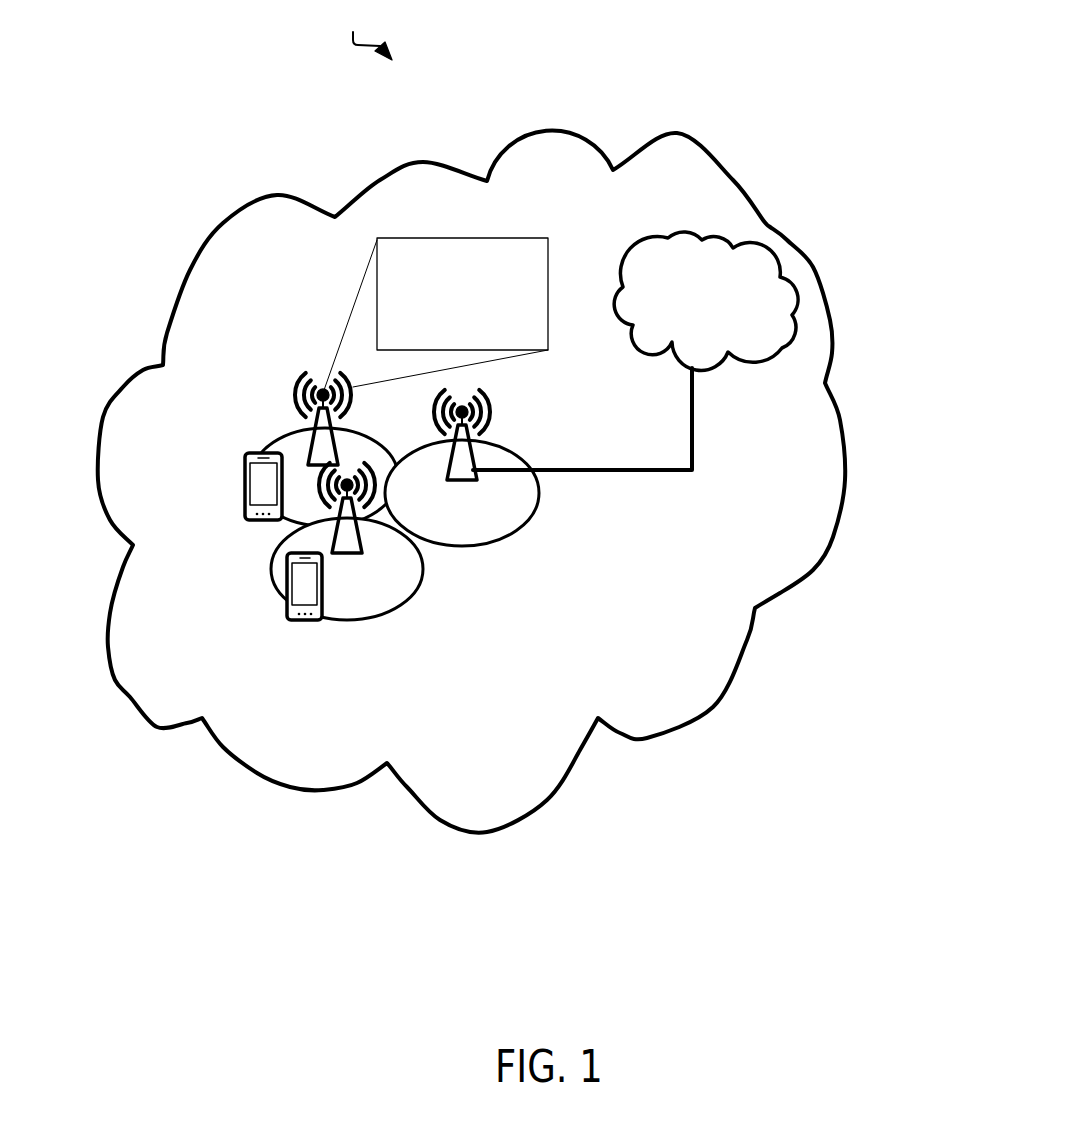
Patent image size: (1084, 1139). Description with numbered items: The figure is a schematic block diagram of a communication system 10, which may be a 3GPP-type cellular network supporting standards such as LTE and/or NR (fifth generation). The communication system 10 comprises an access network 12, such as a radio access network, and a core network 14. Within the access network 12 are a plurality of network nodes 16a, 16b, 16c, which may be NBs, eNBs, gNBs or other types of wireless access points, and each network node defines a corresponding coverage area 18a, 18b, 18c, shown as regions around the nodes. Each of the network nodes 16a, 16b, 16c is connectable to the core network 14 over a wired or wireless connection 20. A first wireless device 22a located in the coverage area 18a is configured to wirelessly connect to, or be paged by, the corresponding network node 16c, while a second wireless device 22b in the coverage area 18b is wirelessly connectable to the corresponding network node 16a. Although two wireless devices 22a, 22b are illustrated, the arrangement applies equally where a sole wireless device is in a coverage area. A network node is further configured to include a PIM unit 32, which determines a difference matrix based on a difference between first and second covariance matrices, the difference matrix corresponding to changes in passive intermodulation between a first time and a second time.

The communication system 10 is at (364, 34).
The access network 12 is at (553, 171).
The core network 14 is at (761, 308).
The network node 16a is at (360, 552).
The network node 16b is at (483, 413).
The network node 16c is at (293, 402).
The coverage area 18a is at (270, 447).
The coverage area 18b is at (425, 570).
The coverage area 18c is at (540, 495).
The connection 20 is at (693, 423).
The first wireless device 22a is at (250, 508).
The second wireless device 22b is at (288, 607).
The PIM unit 32 is at (525, 311).